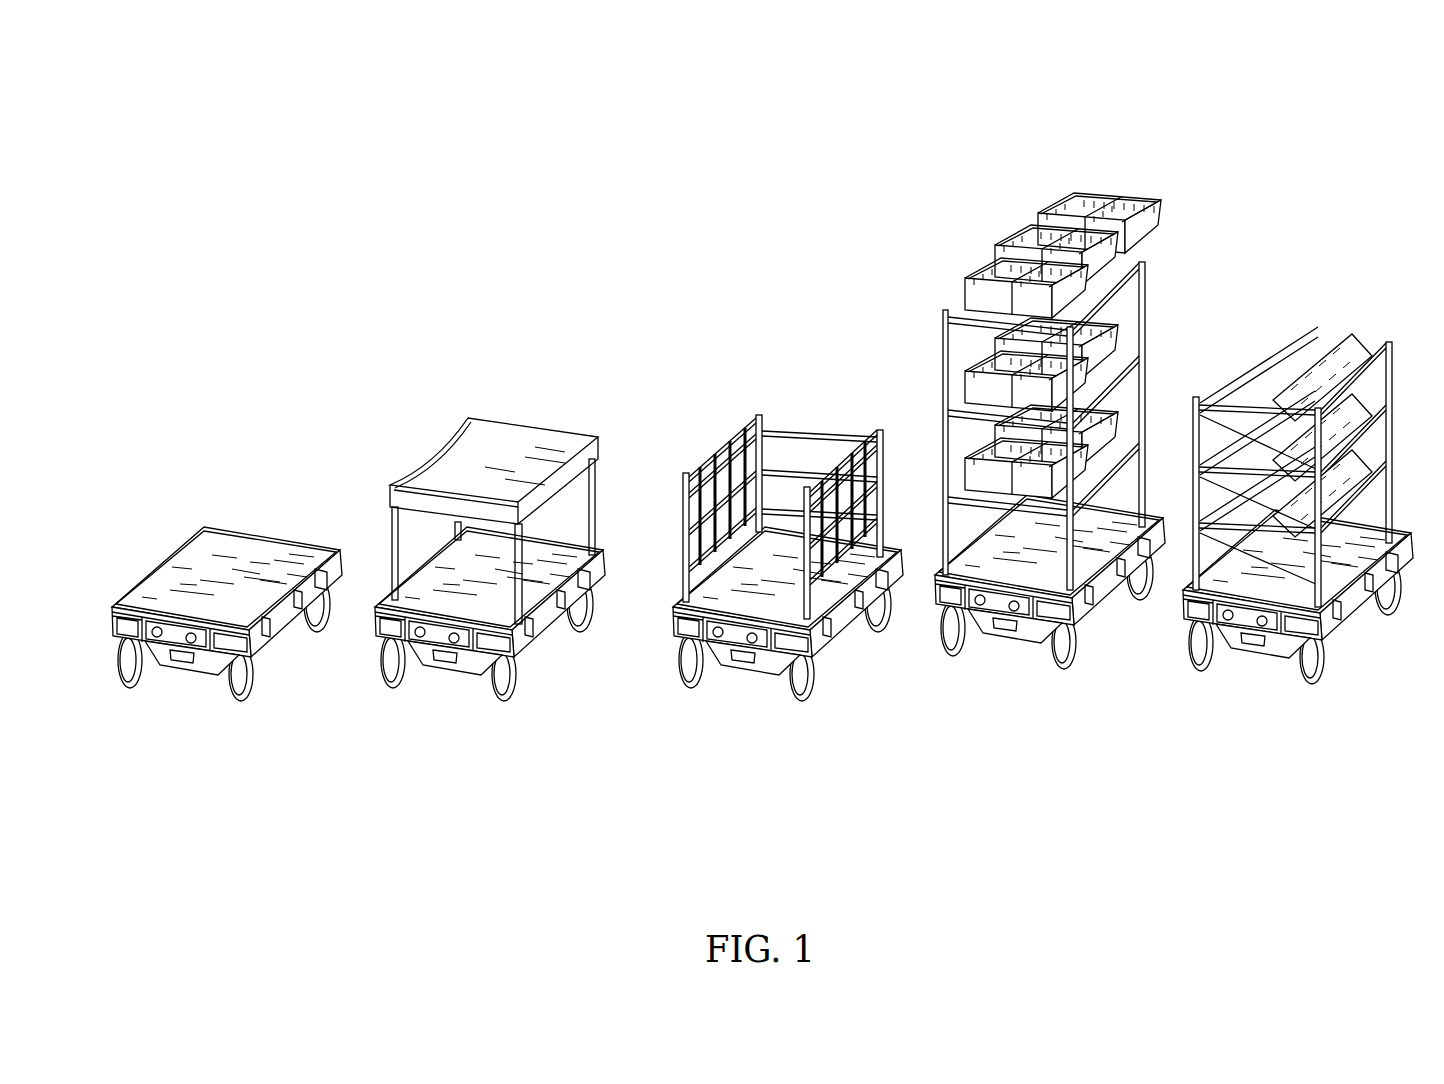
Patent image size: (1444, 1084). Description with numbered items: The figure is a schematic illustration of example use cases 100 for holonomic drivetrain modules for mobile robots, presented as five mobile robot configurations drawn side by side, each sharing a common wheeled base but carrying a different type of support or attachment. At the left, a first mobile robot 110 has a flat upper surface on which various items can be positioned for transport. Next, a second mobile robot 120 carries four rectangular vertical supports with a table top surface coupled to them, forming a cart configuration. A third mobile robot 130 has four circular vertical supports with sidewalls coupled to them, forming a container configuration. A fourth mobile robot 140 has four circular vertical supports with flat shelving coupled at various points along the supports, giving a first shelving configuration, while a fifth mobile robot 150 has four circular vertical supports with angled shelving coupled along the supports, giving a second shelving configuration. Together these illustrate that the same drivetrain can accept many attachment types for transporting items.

The example use cases 100 is at (1318, 88).
The first mobile robot 110 is at (247, 424).
The second mobile robot 120 is at (510, 382).
The third mobile robot 130 is at (788, 382).
The fourth mobile robot 140 is at (1075, 192).
The fifth mobile robot 150 is at (1318, 285).